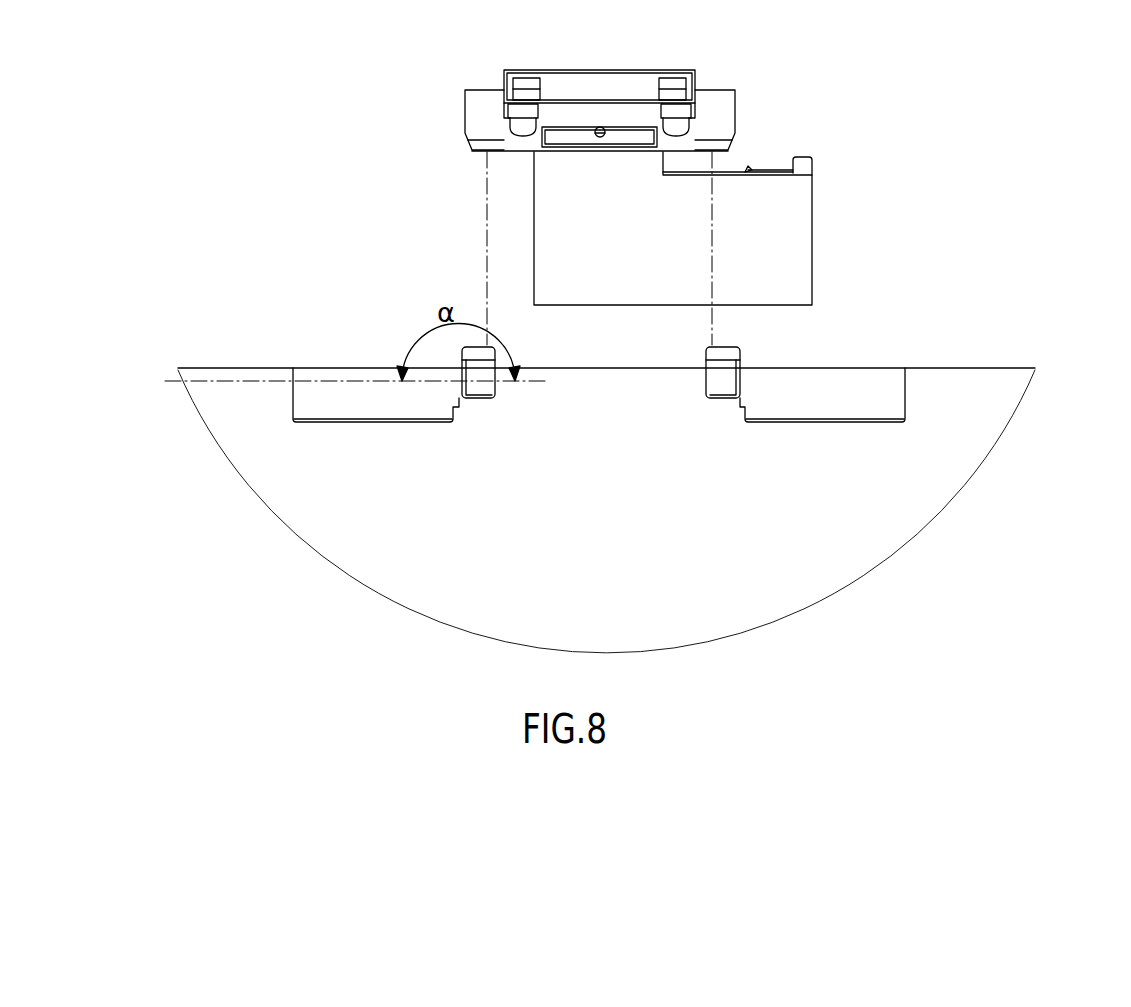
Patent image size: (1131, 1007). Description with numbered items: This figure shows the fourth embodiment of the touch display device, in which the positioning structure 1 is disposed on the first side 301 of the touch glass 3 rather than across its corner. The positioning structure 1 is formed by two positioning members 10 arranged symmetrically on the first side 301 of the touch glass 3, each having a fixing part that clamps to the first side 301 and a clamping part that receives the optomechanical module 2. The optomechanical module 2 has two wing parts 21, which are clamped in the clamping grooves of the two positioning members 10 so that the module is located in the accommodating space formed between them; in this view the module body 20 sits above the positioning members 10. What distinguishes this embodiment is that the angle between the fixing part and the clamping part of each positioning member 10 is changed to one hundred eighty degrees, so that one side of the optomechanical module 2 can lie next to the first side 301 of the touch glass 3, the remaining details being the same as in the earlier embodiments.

The positioning structure 1 is at (638, 339).
The optomechanical module 2 is at (572, 197).
The touch glass 3 is at (878, 540).
The positioning member 10 is at (363, 368).
The main body 20 is at (749, 168).
The wing part 21 is at (490, 102).
The first side 301 is at (618, 320).